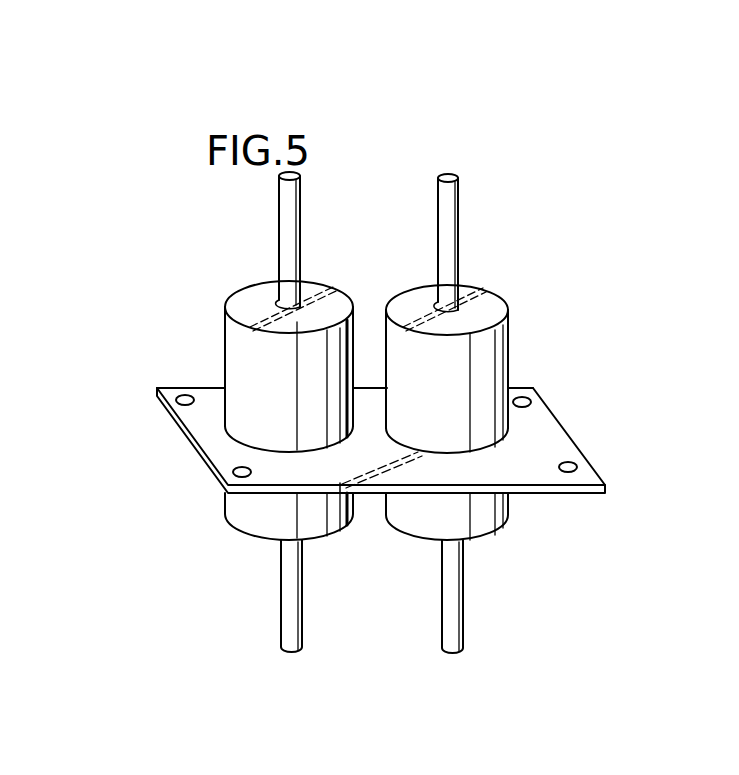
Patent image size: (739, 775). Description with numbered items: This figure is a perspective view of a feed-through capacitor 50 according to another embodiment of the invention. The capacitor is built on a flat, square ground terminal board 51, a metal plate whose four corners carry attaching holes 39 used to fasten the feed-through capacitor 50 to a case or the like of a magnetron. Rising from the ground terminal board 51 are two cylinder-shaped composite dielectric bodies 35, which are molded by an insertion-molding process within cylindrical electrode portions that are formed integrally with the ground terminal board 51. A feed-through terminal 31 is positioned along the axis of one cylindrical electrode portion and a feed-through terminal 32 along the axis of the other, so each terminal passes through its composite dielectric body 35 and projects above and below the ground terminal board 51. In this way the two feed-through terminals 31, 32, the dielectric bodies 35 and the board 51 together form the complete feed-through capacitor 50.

The feed-through capacitor 50 is at (178, 452).
The ground terminal board 51 is at (538, 428).
The attaching holes 39 is at (184, 394).
The composite dielectric bodies 35 is at (240, 358).
The feed-through terminal 31 is at (286, 620).
The feed-through terminal 32 is at (454, 598).